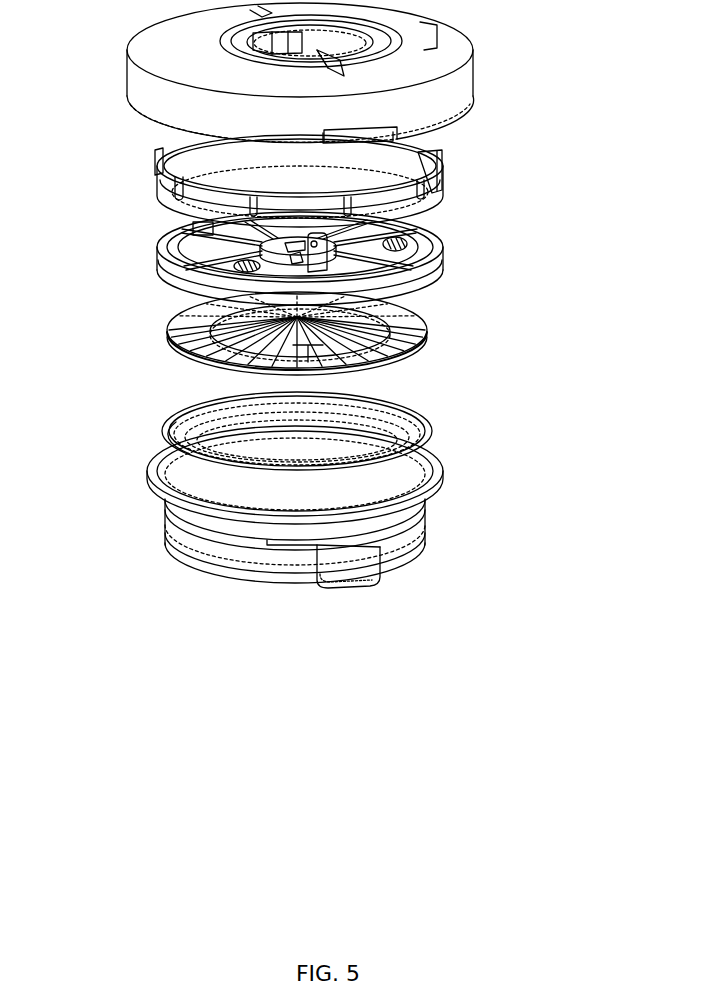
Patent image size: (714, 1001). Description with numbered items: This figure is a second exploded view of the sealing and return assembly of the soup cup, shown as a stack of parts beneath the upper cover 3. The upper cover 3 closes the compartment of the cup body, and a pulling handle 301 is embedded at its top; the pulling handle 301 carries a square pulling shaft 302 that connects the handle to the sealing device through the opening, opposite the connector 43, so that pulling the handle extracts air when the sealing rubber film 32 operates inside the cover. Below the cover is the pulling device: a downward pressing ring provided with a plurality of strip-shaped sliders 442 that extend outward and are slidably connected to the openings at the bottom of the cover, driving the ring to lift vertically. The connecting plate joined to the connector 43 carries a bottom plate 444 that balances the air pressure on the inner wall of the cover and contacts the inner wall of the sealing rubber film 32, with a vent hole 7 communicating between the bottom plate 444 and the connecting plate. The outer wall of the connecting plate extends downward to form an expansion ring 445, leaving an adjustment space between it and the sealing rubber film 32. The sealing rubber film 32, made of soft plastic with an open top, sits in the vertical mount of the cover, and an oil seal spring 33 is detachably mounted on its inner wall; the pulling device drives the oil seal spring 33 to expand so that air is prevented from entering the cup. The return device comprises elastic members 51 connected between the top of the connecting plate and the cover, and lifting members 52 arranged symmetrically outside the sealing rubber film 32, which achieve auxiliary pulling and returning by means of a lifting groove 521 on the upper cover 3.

The upper cover 3 is at (331, 120).
The pulling handle 301 is at (238, 40).
The pulling shaft 302 is at (317, 50).
The strip-shaped slider 442 is at (433, 152).
The lifting groove 521 is at (400, 215).
The expansion ring 445 is at (334, 350).
The vent hole 7 is at (300, 248).
The elastic member 51 is at (236, 263).
The bottom plate 444 is at (424, 334).
The oil seal spring 33 is at (319, 437).
The connector 43 is at (202, 380).
The sealing rubber film 32 is at (327, 561).
The lifting member 52 is at (353, 577).